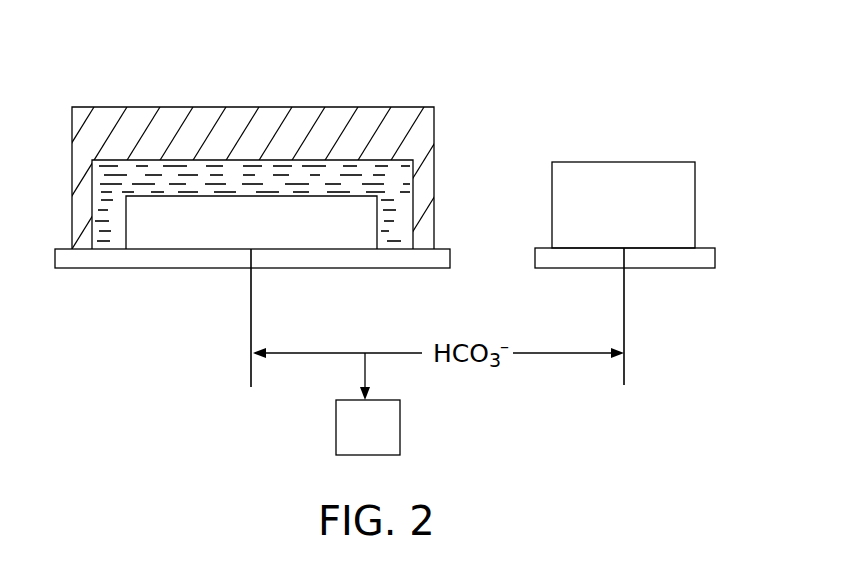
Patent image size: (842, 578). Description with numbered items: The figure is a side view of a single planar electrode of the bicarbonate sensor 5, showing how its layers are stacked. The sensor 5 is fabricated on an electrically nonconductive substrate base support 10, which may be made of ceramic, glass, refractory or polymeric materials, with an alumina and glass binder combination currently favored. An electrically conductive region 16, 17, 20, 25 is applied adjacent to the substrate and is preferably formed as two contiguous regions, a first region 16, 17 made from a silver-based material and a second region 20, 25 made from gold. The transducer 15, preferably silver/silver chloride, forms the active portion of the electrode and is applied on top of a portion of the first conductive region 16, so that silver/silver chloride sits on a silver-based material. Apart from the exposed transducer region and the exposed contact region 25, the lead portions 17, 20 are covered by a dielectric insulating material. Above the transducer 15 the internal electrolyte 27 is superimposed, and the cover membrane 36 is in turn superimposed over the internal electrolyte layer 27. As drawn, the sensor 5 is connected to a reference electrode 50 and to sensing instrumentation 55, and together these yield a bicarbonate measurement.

The bicarbonate sensor 5 is at (259, 161).
The cover membrane 36 is at (434, 128).
The internal electrolyte 27 is at (405, 185).
The transducer 15 is at (270, 234).
The substrate base support 10 is at (450, 257).
The electrically conductive region 16 is at (162, 318).
The electrically conductive region 17 is at (162, 318).
The electrically conductive region 20 is at (162, 318).
The electrically conductive region 25 is at (251, 309).
The reference electrode 50 is at (695, 187).
The sensing instrumentation 55 is at (383, 443).